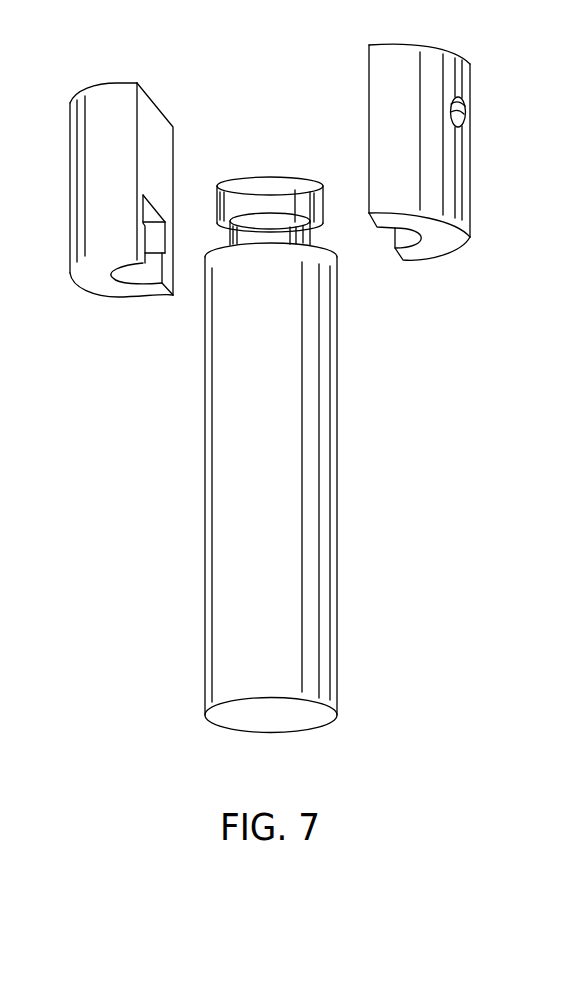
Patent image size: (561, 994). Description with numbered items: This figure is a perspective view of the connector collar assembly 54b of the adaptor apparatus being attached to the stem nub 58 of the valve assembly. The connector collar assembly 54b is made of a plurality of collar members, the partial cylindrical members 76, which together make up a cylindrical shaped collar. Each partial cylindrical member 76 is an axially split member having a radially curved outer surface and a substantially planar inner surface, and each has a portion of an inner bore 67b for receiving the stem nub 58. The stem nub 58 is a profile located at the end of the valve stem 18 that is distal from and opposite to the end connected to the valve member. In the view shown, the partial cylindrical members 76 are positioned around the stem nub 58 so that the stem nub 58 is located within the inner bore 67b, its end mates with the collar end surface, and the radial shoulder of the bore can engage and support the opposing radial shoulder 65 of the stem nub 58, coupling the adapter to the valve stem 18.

The valve stem 18 is at (232, 552).
The stem nub 58 is at (260, 187).
The opposing radial shoulder 65 is at (313, 222).
The connector collar assembly 54b is at (415, 152).
The inner bore 67b is at (158, 238).
The partial cylindrical members 76 is at (448, 180).